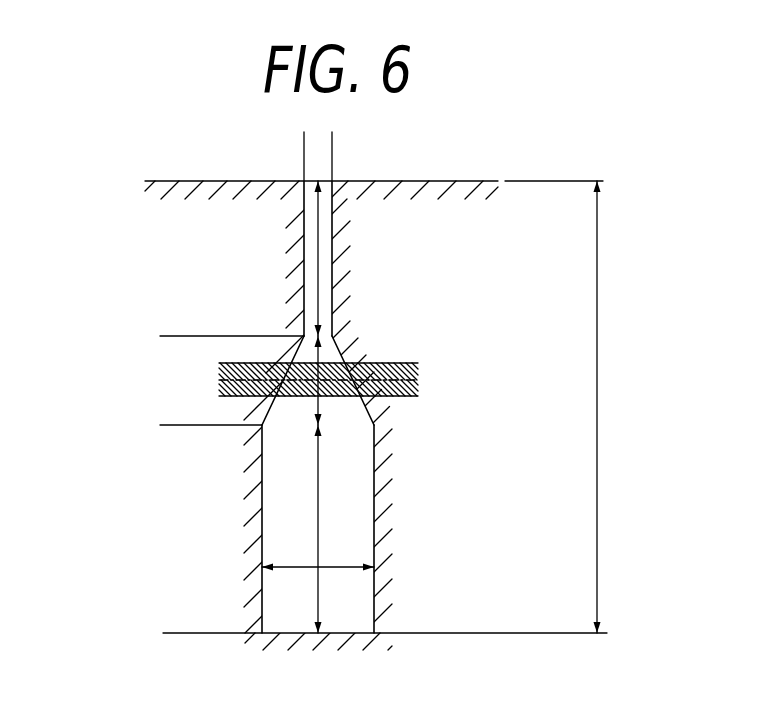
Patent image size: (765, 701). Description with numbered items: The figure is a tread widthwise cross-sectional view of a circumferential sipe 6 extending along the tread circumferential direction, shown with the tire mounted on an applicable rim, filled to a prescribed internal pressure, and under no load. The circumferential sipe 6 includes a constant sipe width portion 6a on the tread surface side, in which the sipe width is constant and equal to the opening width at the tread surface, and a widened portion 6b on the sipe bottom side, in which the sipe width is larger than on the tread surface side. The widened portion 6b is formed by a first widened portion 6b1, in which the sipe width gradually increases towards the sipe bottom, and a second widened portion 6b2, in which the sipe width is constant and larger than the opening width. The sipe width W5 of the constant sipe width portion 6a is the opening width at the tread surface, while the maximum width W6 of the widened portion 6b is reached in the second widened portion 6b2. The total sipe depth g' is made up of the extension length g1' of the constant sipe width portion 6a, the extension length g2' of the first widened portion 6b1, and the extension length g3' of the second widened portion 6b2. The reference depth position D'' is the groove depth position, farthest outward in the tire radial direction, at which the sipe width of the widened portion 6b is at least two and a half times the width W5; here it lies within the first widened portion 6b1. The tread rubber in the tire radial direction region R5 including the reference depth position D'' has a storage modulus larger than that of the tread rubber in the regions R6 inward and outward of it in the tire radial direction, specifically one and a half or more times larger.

The circumferential sipe 6 is at (200, 407).
The constant sipe width portion 6a is at (310, 269).
The widened portion 6b is at (216, 484).
The first widened portion 6b1 is at (160, 335).
The second widened portion 6b2 is at (239, 529).
The sipe width of the constant sipe width portion W5 is at (346, 143).
The maximum width of the widened portion W6 is at (318, 557).
The extension length of the constant sipe width portion g1' is at (360, 258).
The extension length of the first widened portion g2' is at (339, 393).
The extension length of the second widened portion g3' is at (332, 529).
The sipe depth g' is at (608, 407).
The reference depth position D'' is at (300, 381).
The tire radial direction region R5 is at (421, 388).
The regions inward and outward in the tire radial direction R6 is at (388, 285).